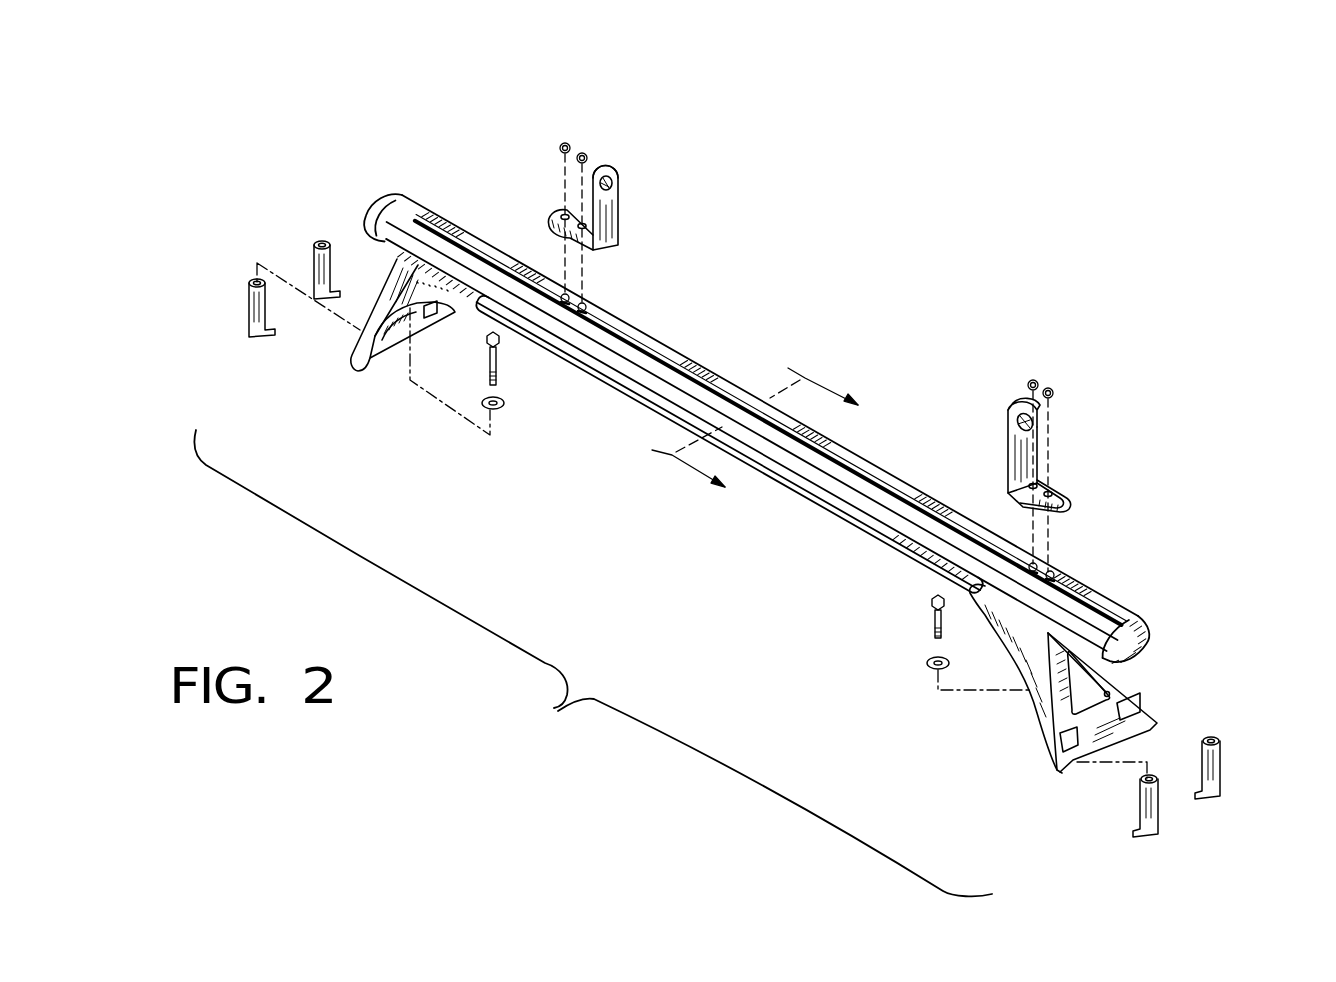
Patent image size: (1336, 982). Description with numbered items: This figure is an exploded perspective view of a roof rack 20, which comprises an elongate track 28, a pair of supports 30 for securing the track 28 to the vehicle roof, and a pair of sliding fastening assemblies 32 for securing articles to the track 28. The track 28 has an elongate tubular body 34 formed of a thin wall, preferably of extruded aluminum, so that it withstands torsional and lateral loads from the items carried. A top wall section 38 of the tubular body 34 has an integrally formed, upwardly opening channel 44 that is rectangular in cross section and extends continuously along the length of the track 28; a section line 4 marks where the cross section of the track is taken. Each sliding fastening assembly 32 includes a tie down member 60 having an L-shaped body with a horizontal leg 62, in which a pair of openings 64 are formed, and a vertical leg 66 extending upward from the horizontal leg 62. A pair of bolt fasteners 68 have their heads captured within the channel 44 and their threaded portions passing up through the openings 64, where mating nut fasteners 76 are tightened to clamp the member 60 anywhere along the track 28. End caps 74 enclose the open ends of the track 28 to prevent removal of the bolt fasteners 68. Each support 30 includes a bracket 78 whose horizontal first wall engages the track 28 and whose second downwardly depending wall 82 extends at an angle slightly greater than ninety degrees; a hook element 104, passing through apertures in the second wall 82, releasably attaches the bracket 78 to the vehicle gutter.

The section line 4 is at (743, 417).
The roof rack 20 is at (546, 711).
The elongate track 28 is at (776, 414).
The support 30 is at (719, 523).
The sliding fastening assembly 32 is at (830, 307).
The elongate tubular body 34 is at (742, 452).
The top wall section 38 is at (756, 404).
The upwardly opening channel 44 is at (769, 420).
The tie down member 60 is at (810, 310).
The horizontal leg 62 is at (562, 215).
The openings 64 is at (566, 214).
The vertical leg 66 is at (612, 205).
The bolt fasteners 68 is at (570, 298).
The end caps 74 is at (685, 354).
The nut fasteners 76 is at (583, 152).
The bracket 78 is at (345, 352).
The second downwardly depending wall 82 is at (405, 345).
The hook element 104 is at (308, 240).